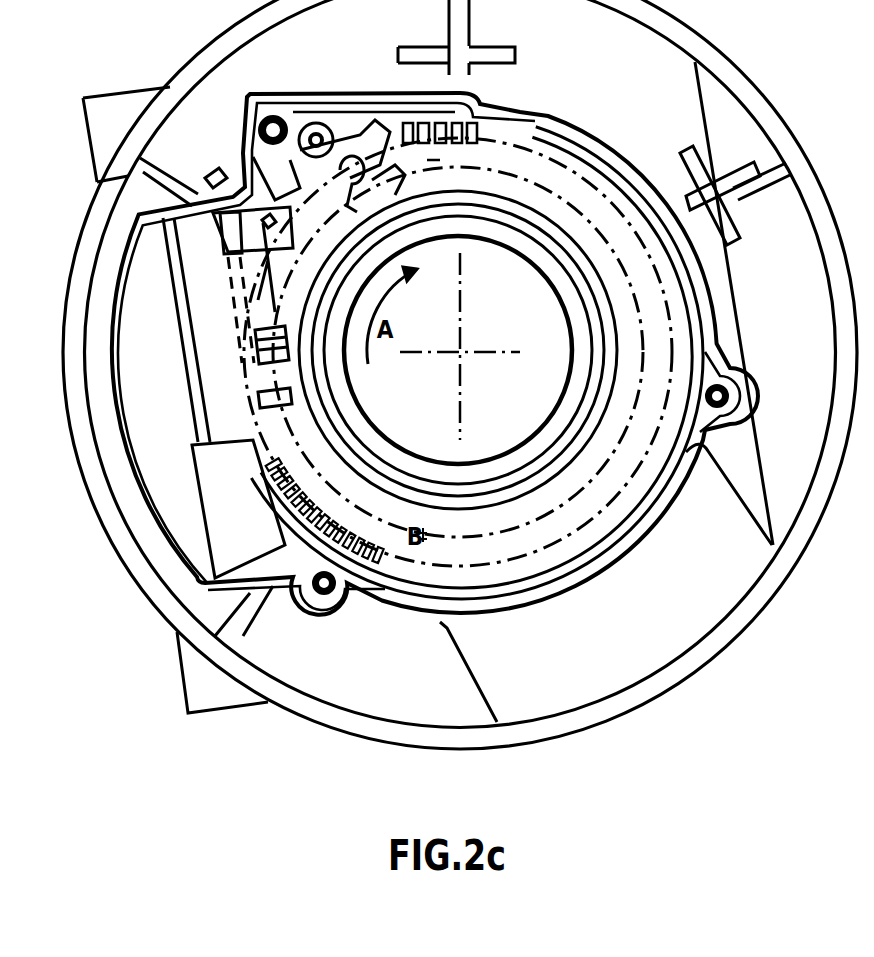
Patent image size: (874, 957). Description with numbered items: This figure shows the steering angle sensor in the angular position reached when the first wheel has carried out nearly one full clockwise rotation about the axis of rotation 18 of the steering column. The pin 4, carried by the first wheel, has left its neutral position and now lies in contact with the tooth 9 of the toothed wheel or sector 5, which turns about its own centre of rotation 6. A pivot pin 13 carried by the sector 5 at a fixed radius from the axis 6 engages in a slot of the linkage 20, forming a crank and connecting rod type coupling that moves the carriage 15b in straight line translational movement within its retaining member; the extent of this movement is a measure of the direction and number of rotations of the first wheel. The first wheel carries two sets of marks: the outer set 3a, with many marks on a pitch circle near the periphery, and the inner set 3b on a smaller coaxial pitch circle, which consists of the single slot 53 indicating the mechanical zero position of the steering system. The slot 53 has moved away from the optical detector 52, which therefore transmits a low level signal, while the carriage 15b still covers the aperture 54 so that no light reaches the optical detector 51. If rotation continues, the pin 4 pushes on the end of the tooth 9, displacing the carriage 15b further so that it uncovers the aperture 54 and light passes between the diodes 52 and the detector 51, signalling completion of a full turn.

The set of marks 3a is at (580, 117).
The set of marks 3b is at (579, 207).
The pin 4 is at (467, 160).
The toothed wheel or sector 5 is at (373, 140).
The axis of rotation 6 is at (316, 122).
The tooth 9 is at (372, 190).
The pivot pin 13 is at (357, 133).
The carriage 15b is at (247, 148).
The axis of rotation 18 is at (462, 345).
The linkage 20 is at (268, 200).
The optical detector 51 is at (213, 245).
The optical detector 52 is at (270, 342).
The slot 53 is at (265, 400).
The aperture 54 is at (262, 240).